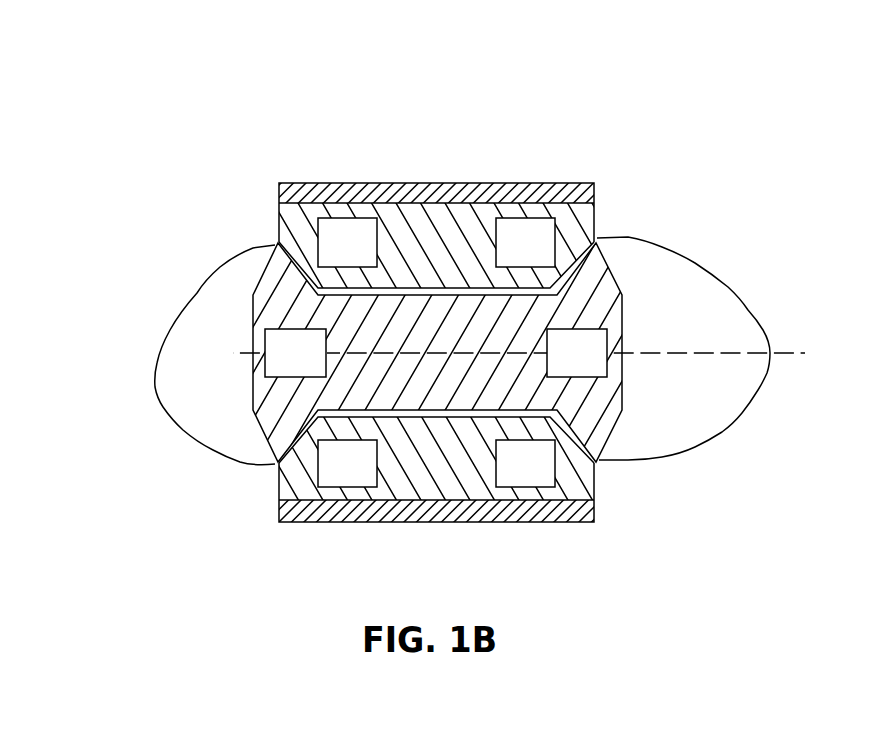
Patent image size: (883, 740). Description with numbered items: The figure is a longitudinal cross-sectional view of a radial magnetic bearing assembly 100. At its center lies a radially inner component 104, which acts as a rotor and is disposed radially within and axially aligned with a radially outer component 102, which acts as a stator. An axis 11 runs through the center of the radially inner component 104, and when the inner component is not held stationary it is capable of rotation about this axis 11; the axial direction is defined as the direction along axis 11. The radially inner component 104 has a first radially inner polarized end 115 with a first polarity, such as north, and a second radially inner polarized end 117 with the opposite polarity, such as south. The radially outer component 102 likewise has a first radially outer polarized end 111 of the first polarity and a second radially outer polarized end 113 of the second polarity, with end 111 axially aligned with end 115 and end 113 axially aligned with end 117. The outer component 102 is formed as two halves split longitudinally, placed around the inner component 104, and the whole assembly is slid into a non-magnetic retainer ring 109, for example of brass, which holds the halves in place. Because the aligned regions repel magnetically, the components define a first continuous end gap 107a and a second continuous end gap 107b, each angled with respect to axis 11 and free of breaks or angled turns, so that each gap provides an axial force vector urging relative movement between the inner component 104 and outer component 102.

The radial magnetic bearing assembly 100 is at (452, 327).
The radially outer component 102 is at (443, 240).
The radially inner component 104 is at (625, 327).
The first continuous end gap 107a is at (155, 390).
The second continuous end gap 107b is at (732, 418).
The retainer ring 109 is at (531, 190).
The axis 11 is at (808, 346).
The first radially outer polarized end 111 is at (331, 253).
The second radially outer polarized end 113 is at (509, 253).
The first radially inner polarized end 115 is at (279, 363).
The second radially inner polarized end 117 is at (560, 363).